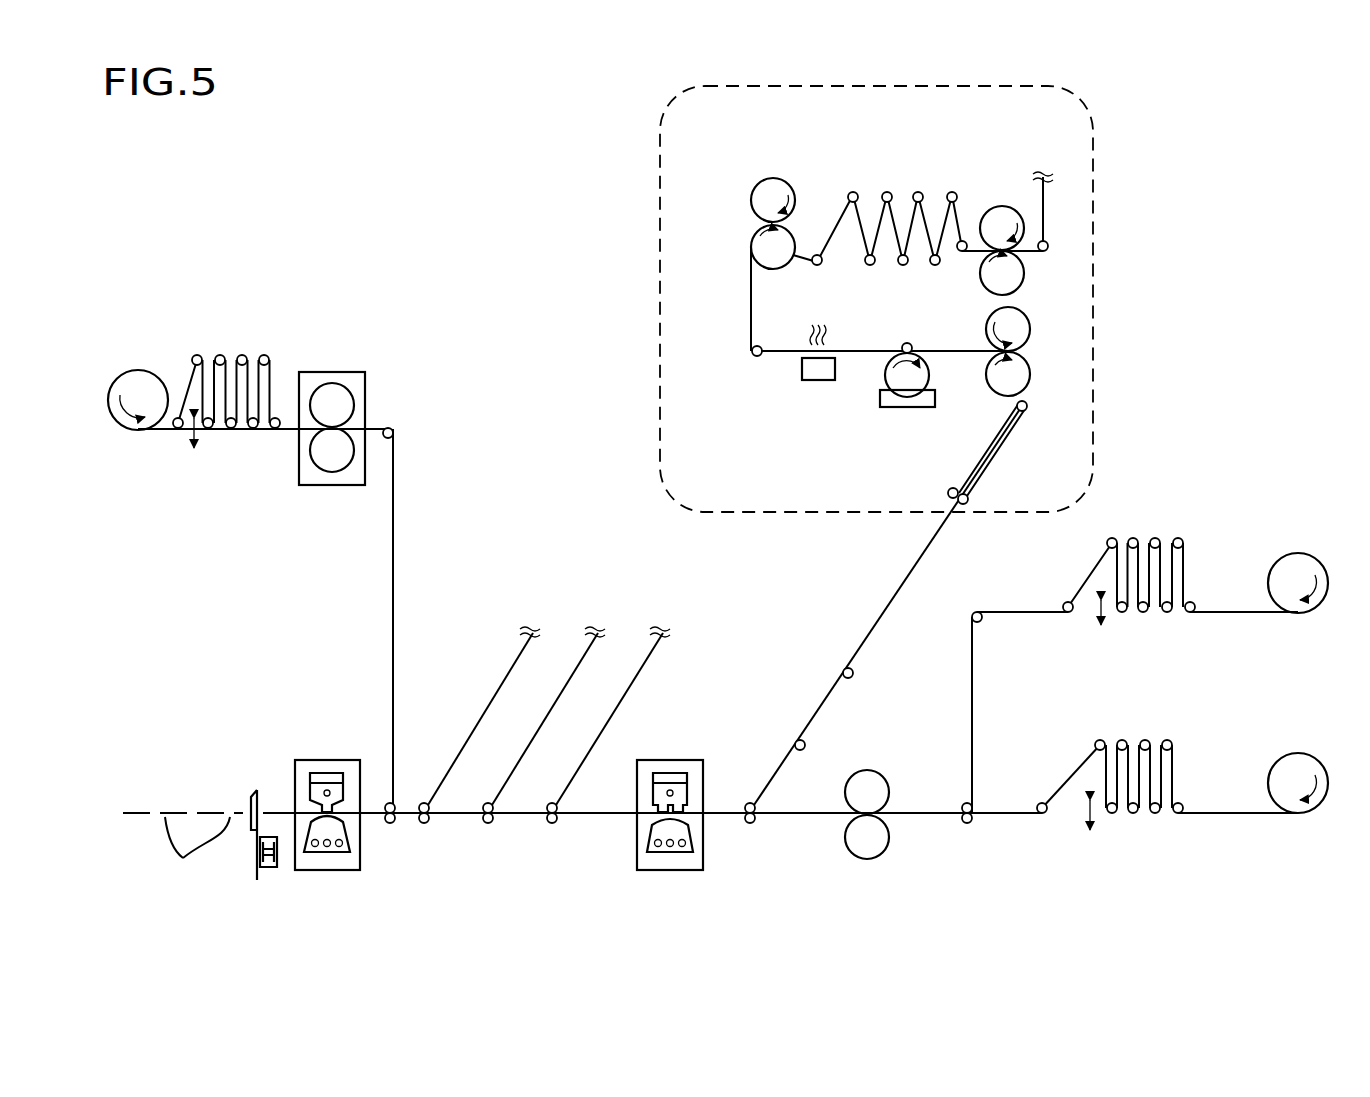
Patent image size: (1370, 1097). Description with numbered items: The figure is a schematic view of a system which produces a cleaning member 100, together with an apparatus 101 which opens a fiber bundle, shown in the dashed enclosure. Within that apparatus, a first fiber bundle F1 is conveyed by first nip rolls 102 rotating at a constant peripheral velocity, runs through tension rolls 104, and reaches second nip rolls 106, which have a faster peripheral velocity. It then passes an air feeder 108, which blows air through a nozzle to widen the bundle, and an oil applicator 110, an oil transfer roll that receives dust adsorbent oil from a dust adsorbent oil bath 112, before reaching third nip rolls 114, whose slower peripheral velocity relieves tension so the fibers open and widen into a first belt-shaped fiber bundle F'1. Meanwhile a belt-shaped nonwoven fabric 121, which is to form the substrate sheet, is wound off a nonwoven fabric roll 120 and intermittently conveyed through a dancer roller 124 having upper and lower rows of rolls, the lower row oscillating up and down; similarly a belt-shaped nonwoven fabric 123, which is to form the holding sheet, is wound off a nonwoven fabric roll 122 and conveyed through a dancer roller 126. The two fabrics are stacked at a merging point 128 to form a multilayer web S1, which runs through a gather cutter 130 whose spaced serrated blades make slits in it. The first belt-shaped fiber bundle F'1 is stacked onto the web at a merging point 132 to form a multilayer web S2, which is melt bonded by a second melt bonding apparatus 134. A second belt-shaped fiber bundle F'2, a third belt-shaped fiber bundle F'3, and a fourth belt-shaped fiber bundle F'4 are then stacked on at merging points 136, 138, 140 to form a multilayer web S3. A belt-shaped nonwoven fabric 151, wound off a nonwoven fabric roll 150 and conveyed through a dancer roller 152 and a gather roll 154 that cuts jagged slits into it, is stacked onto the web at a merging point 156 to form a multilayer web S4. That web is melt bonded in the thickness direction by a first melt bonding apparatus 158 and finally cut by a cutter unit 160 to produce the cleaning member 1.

The cleaning member 1 is at (197, 856).
The system which produces a cleaning member 100 is at (1187, 316).
The laminate forming unit 101 is at (658, 300).
The first nip rolls 102 is at (1002, 205).
The tension rolls 104 is at (918, 192).
The second nip rolls 106 is at (773, 178).
The air feeder 108 is at (802, 372).
The oil applicator 110 is at (888, 380).
The dust adsorbent oil bath 112 is at (924, 407).
The third nip rolls 114 is at (1028, 325).
The nonwoven fabric roll 120 is at (1298, 762).
The belt-shaped nonwoven fabric 121 is at (1216, 812).
The nonwoven fabric roll 122 is at (1298, 563).
The belt-shaped nonwoven fabric 123 is at (1222, 612).
The dancer roller 124 is at (1135, 728).
The dancer roller 126 is at (1135, 524).
The merging point 128 is at (980, 808).
The gather cutter 130 is at (862, 785).
The merging point 132 is at (753, 832).
The second melt bonding apparatus 134 is at (672, 757).
The merging point 136 is at (556, 832).
The merging point 138 is at (492, 832).
The merging point 140 is at (428, 832).
The nonwoven fabric roll 150 is at (140, 388).
The belt-shaped nonwoven fabric 151 is at (160, 432).
The dancer roller 152 is at (245, 340).
The gather roll 154 is at (333, 362).
The merging point 156 is at (388, 832).
The first melt bonding apparatus 158 is at (312, 758).
The cutter unit 160 is at (268, 870).
The multilayer web S1 is at (920, 812).
The multilayer web S2 is at (723, 812).
The multilayer web S3 is at (405, 822).
The multilayer web S4 is at (378, 808).
The first fiber bundle F1 is at (1045, 228).
The first belt-shaped fiber bundle F'1 is at (855, 513).
The second belt-shaped fiber bundle F'2 is at (627, 716).
The third belt-shaped fiber bundle F'3 is at (562, 716).
The fourth belt-shaped fiber bundle F'4 is at (498, 716).